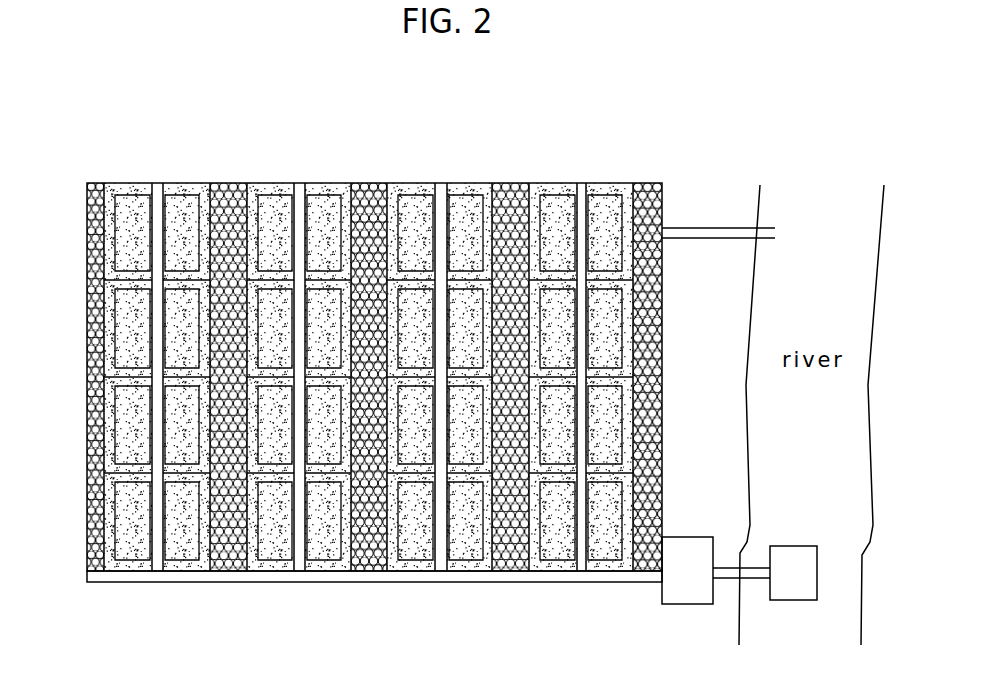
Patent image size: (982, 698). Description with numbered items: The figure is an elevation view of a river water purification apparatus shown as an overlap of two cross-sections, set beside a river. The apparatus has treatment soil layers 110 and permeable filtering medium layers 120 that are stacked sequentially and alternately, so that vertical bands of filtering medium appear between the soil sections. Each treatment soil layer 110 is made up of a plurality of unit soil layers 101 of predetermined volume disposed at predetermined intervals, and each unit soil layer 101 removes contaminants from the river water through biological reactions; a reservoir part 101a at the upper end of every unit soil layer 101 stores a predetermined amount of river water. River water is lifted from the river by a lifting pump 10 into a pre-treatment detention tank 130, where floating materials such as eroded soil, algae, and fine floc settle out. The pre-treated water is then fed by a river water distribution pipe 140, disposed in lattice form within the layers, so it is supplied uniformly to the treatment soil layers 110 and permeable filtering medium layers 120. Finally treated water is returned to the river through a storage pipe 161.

The treatment soil layer 110 is at (607, 158).
The permeable filtering medium layer 120 is at (230, 182).
The unit soil layer 101 is at (255, 182).
The reservoir part 101a is at (472, 202).
The river water distribution pipe 140 is at (157, 532).
The storage pipe 161 is at (705, 230).
The pre-treatment detention tank 130 is at (680, 604).
The lifting pump 10 is at (795, 600).